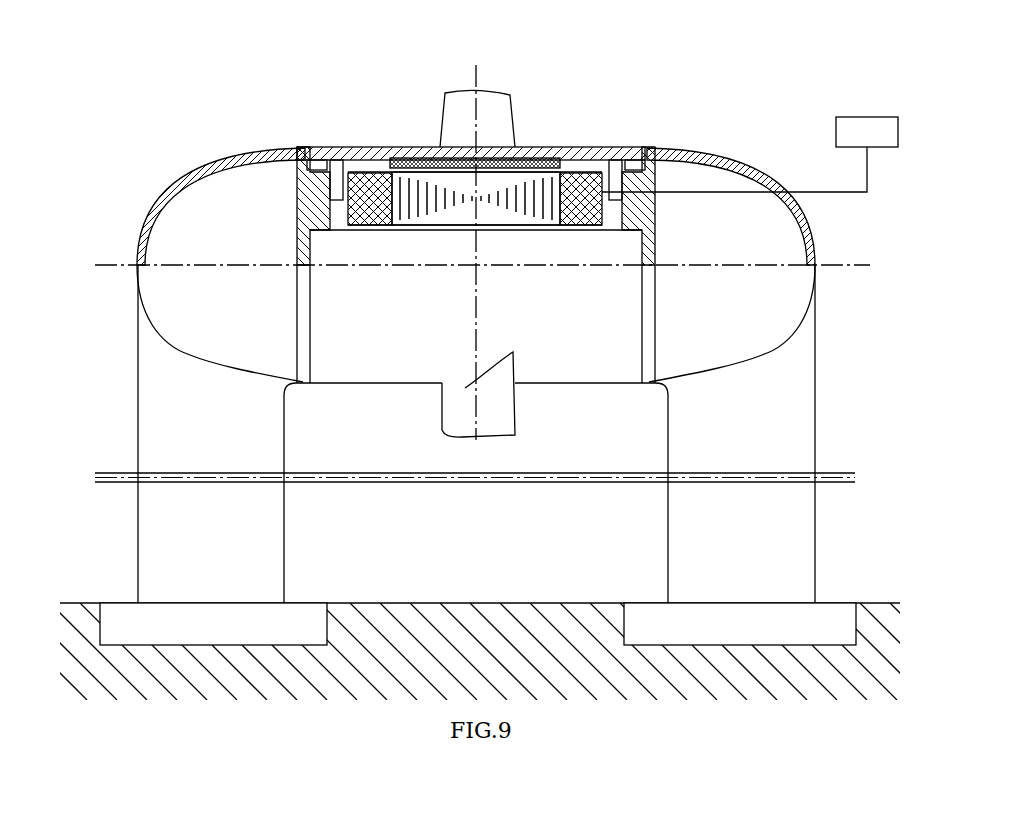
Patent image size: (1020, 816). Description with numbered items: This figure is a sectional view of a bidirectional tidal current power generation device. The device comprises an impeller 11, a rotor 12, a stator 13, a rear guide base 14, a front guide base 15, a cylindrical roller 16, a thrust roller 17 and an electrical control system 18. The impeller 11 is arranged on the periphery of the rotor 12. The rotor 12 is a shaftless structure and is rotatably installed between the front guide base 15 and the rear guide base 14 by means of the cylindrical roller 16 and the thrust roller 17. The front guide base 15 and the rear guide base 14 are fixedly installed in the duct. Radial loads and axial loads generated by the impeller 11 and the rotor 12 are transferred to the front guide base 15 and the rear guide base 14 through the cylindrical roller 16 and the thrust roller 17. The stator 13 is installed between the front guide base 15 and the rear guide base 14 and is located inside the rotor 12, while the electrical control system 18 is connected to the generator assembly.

The impeller 11 is at (466, 112).
The rotor 12 is at (548, 152).
The stator 13 is at (597, 168).
The rear guide base 14 is at (713, 235).
The front guide base 15 is at (262, 240).
The cylindrical roller 16 is at (314, 172).
The thrust roller 17 is at (342, 195).
The electrical control system 18 is at (868, 133).